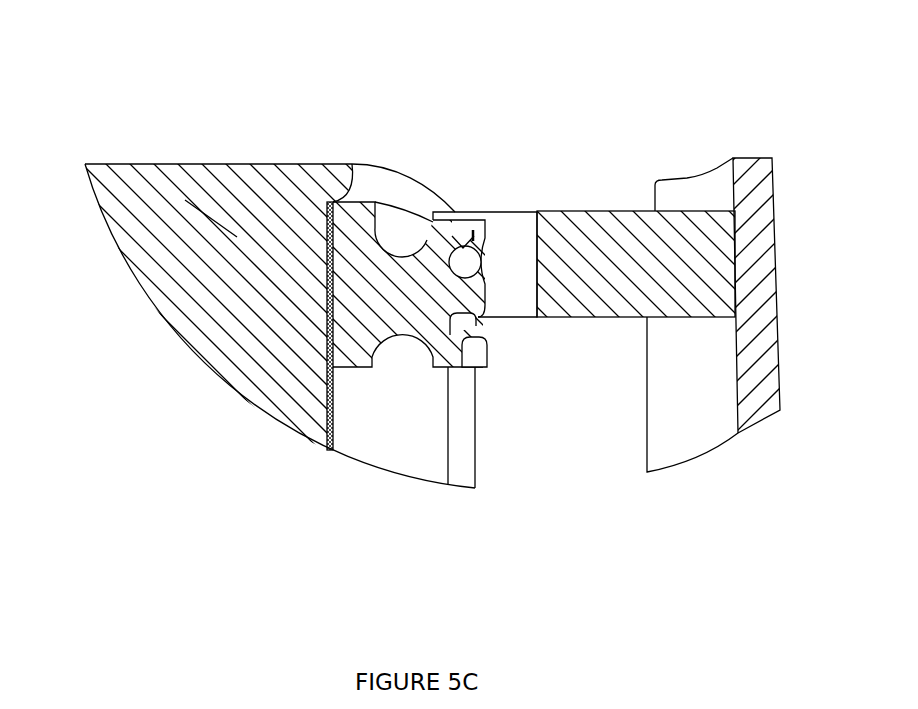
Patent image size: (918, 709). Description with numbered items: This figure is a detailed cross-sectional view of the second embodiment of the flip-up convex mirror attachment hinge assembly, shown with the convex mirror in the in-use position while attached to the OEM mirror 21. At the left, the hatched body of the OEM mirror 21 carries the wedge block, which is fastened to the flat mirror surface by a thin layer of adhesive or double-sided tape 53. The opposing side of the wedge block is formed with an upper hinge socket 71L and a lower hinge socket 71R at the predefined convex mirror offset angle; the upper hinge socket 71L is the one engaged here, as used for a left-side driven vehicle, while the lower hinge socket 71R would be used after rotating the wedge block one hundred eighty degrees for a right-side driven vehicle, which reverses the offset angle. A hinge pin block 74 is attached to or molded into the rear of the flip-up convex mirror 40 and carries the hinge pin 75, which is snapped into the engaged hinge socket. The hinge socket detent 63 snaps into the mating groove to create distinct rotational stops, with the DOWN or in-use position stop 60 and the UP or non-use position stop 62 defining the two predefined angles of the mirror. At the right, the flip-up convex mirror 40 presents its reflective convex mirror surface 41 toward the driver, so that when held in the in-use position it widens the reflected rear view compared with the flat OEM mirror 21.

The OEM mirror 21 is at (150, 165).
The adhesive or double-sided tape 53 is at (328, 305).
The DOWN or in-use position stop 60 is at (462, 240).
The hinge pin 75 is at (486, 238).
The UP or non-use position stop 62 is at (472, 265).
The upper hinge socket 71L is at (462, 243).
The hinge socket detent 63 is at (459, 340).
The lower hinge socket 71R is at (470, 356).
The hinge pin block 74 is at (602, 228).
The reflective convex mirror surface 41 is at (760, 360).
The flip-up convex mirror 40 is at (672, 437).